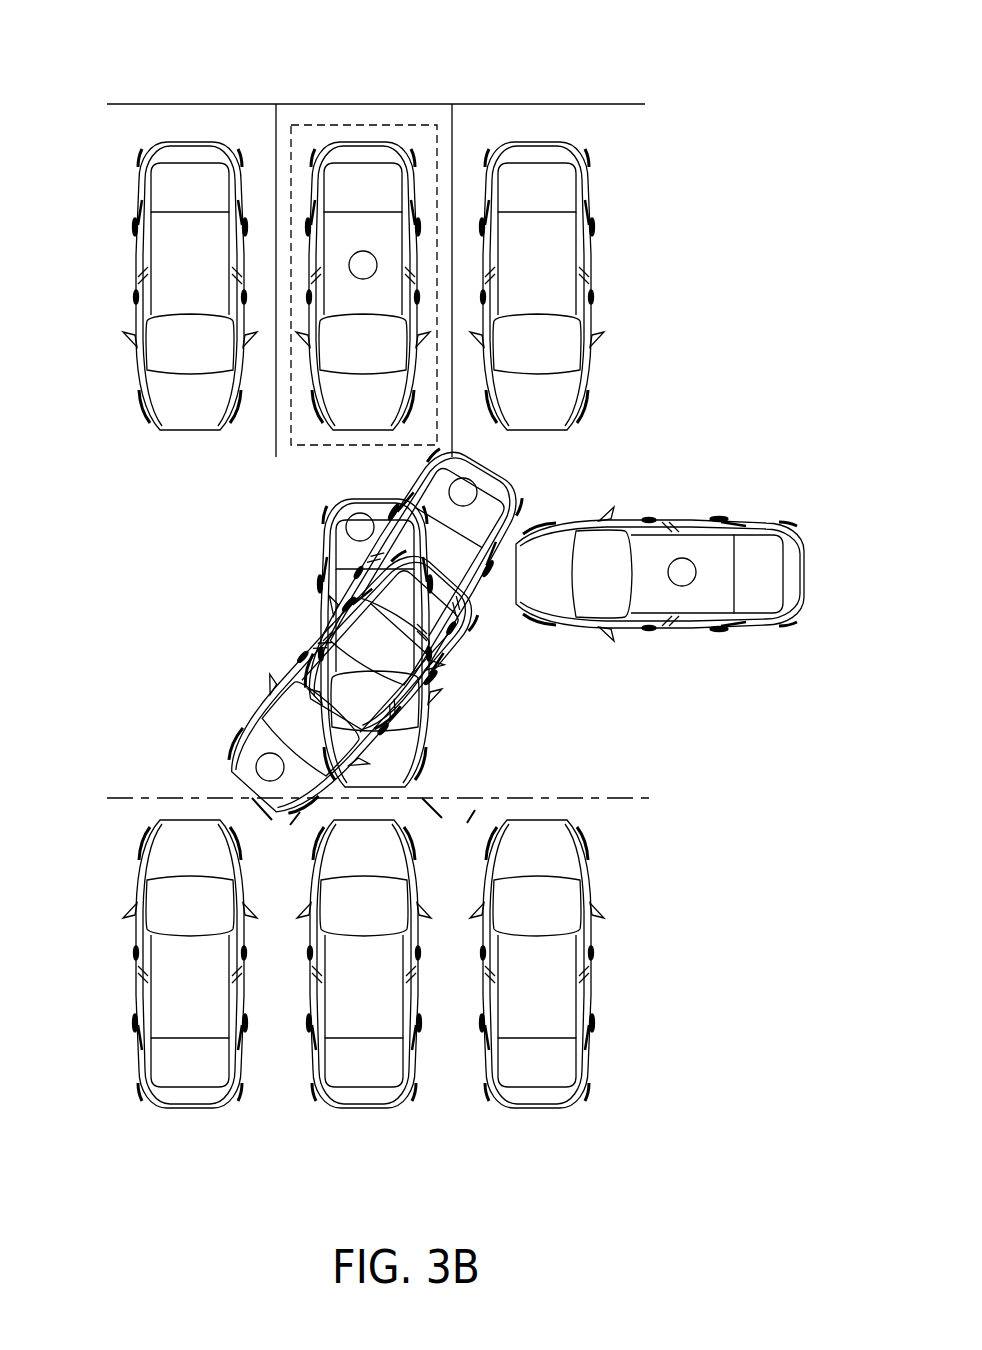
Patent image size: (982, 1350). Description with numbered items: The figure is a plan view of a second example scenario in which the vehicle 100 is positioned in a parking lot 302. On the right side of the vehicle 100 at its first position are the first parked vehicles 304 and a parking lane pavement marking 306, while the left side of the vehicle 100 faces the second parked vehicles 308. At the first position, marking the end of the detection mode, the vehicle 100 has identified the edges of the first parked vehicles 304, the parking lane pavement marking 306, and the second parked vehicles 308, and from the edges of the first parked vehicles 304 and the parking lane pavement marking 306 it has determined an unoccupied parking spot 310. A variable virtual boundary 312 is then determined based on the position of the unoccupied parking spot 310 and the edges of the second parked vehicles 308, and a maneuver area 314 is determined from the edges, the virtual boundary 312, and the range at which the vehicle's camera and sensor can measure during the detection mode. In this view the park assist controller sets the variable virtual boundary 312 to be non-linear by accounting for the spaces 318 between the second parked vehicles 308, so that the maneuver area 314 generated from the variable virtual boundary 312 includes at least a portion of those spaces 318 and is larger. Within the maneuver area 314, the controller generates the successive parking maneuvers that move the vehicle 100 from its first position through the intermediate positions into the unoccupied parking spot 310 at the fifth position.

The vehicle 100 is at (363, 140).
The parking lot 302 is at (78, 132).
The first parked vehicles 304 is at (190, 140).
The parking lane pavement marking 306 is at (297, 104).
The second parked vehicles 308 is at (190, 1112).
The unoccupied parking spot 310 is at (412, 125).
The variable virtual boundary 312 is at (125, 797).
The maneuver area 314 is at (117, 581).
The spaces 318 is at (274, 1073).